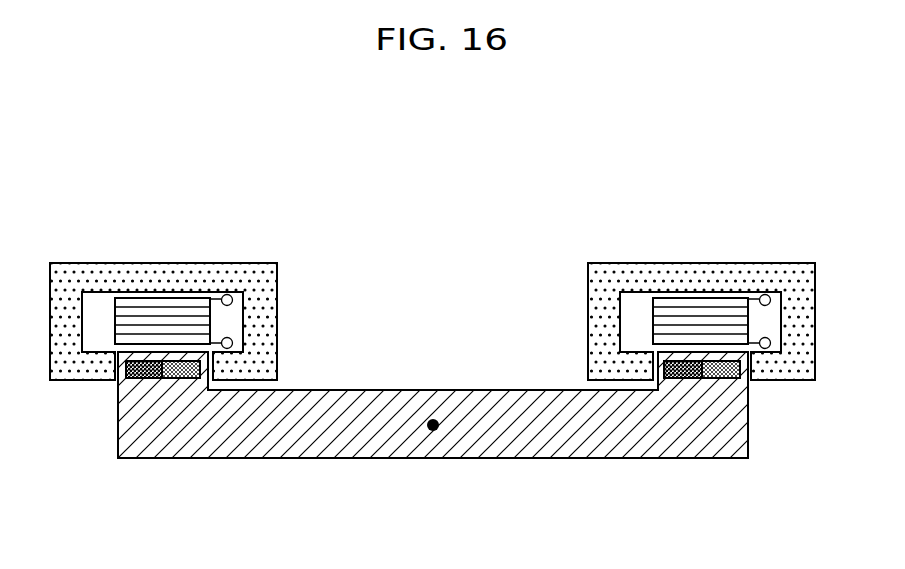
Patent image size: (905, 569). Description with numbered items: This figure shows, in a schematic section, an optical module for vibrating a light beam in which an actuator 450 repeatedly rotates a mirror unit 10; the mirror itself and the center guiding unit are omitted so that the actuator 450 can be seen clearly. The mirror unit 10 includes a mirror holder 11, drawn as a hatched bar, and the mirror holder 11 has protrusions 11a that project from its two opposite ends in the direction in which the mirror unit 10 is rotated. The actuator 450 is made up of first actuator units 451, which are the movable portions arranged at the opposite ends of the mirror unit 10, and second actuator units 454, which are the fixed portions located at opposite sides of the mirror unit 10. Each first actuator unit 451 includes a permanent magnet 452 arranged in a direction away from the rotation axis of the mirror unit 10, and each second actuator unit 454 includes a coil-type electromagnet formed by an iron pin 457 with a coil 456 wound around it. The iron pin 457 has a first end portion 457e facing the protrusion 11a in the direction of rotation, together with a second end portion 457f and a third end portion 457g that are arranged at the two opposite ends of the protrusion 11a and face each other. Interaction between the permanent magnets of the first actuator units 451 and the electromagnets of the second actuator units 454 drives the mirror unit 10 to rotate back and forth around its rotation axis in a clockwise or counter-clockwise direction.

The mirror unit 10 is at (433, 441).
The mirror holder 11 is at (392, 447).
The protrusion 11a is at (115, 408).
The actuator 450 is at (431, 274).
The first actuator unit 451 is at (183, 397).
The permanent magnet 452 is at (146, 384).
The second actuator unit 454 is at (432, 310).
The coil 456 is at (135, 297).
The iron pin 457 is at (432, 322).
The first end portion 457e is at (165, 348).
The second end portion 457f is at (113, 383).
The third end portion 457g is at (215, 362).